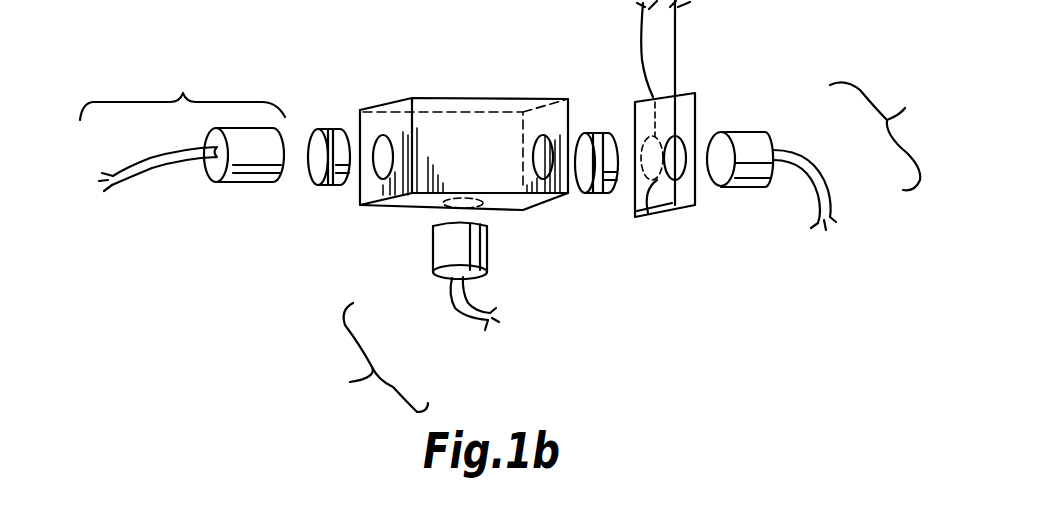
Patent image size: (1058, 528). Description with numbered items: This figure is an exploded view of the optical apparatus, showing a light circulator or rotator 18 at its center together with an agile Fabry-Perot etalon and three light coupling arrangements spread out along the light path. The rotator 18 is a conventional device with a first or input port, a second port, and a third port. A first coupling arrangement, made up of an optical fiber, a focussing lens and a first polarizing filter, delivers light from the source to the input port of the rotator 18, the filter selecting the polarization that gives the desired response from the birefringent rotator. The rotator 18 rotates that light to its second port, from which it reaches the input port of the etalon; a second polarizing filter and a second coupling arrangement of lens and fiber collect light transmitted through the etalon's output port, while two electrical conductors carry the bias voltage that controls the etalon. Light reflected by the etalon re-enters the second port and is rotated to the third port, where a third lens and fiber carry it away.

The light rotator 18 is at (472, 97).